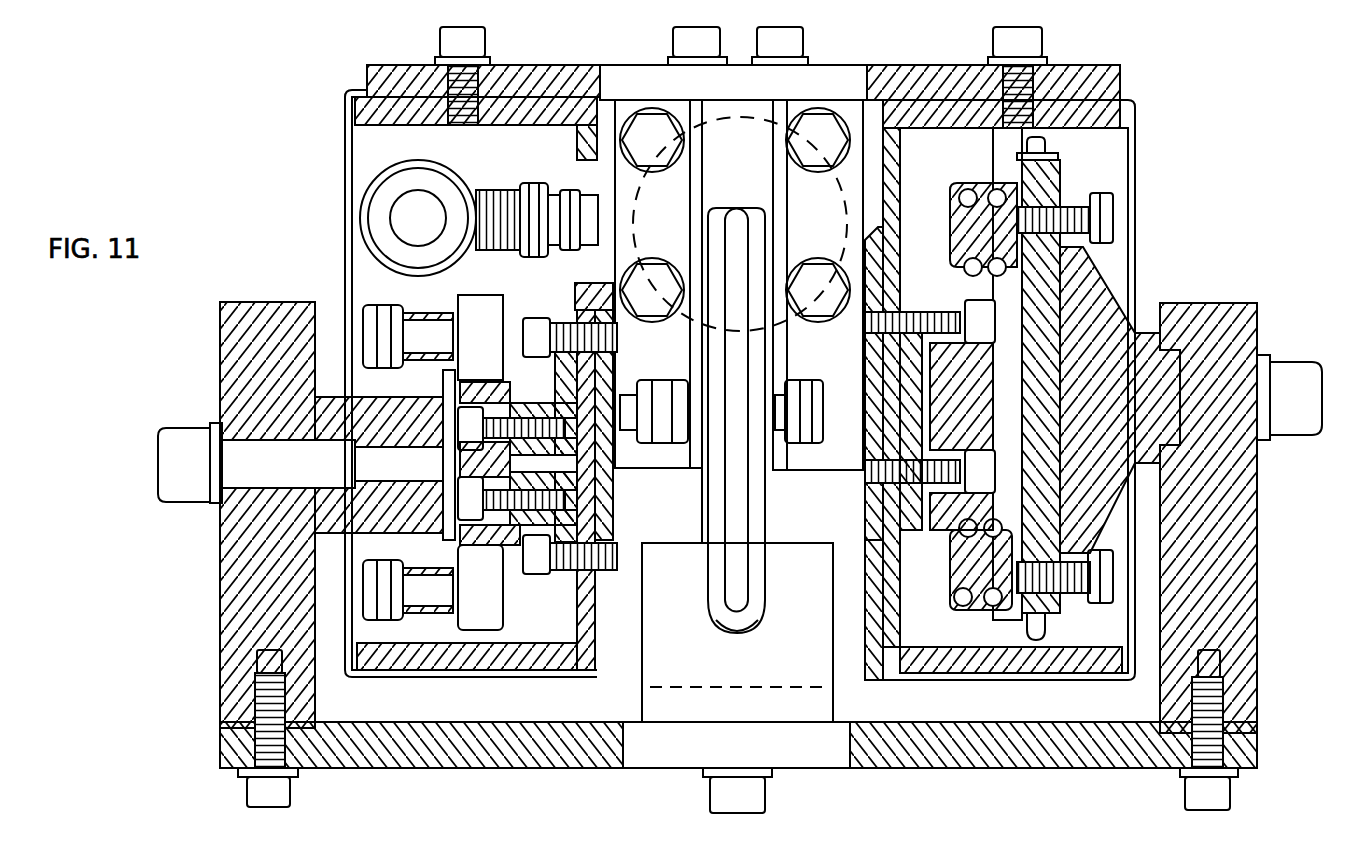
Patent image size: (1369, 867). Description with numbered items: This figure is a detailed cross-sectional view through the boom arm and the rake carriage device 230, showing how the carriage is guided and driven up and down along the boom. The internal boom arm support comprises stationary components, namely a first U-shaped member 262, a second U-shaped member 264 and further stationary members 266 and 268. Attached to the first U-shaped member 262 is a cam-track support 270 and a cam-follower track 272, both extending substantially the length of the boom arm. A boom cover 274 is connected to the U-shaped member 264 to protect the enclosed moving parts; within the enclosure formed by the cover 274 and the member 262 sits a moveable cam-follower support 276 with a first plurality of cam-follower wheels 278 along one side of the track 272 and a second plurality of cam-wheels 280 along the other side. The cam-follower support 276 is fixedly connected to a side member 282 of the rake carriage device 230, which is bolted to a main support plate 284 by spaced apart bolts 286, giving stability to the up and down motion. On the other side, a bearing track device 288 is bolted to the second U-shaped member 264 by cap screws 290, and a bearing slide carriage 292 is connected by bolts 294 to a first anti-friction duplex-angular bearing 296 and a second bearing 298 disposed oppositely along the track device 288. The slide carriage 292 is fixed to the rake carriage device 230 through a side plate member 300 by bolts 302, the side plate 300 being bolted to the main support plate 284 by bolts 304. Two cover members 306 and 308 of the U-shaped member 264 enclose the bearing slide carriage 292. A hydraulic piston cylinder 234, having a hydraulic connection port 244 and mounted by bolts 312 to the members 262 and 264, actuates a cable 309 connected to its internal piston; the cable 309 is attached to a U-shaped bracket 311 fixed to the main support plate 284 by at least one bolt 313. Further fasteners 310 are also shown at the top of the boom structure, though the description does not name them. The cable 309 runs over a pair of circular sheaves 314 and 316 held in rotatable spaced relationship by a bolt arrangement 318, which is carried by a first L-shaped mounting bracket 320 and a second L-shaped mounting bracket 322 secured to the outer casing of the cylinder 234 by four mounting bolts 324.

The rake carriage device 230 is at (1266, 600).
The hydraulic piston cylinder 234 is at (738, 150).
The hydraulic connection port 244 is at (468, 190).
The first U-shaped member 262 is at (522, 672).
The second U-shaped member 264 is at (892, 675).
The stationary member 266 is at (737, 632).
The stationary member 268 is at (865, 355).
The cam-track support 270 is at (555, 392).
The cam-follower track 272 is at (520, 565).
The boom cover 274 is at (345, 182).
The cam-follower support 276 is at (343, 420).
The cam-follower wheels 278 is at (478, 608).
The cam-wheels 280 is at (490, 332).
The side member 282 is at (220, 622).
The main support plate 284 is at (1146, 748).
The bolts 286 is at (290, 788).
The bearing track device 288 is at (876, 515).
The cap screws 290 is at (978, 318).
The bearing slide carriage 292 is at (1102, 340).
The bolts 294 is at (1093, 195).
The first bearing 296 is at (975, 190).
The second bearing 298 is at (950, 580).
The side plate member 300 is at (1225, 515).
The bolts 302 is at (1292, 386).
The bolts 304 is at (1230, 792).
The cover member 306 is at (1137, 165).
The cover member 308 is at (1022, 676).
The cable 309 is at (730, 622).
The cap screw 310 is at (673, 42).
The U-shaped bracket 311 is at (777, 548).
The bolts 312 is at (1102, 66).
The bolt 313 is at (766, 792).
The circular sheave 314 is at (716, 558).
The circular sheave 316 is at (760, 582).
The bolt arrangement 318 is at (788, 446).
The first L-shaped mounting bracket 320 is at (643, 450).
The second L-shaped mounting bracket 322 is at (850, 476).
The mounting bolts 324 is at (652, 272).